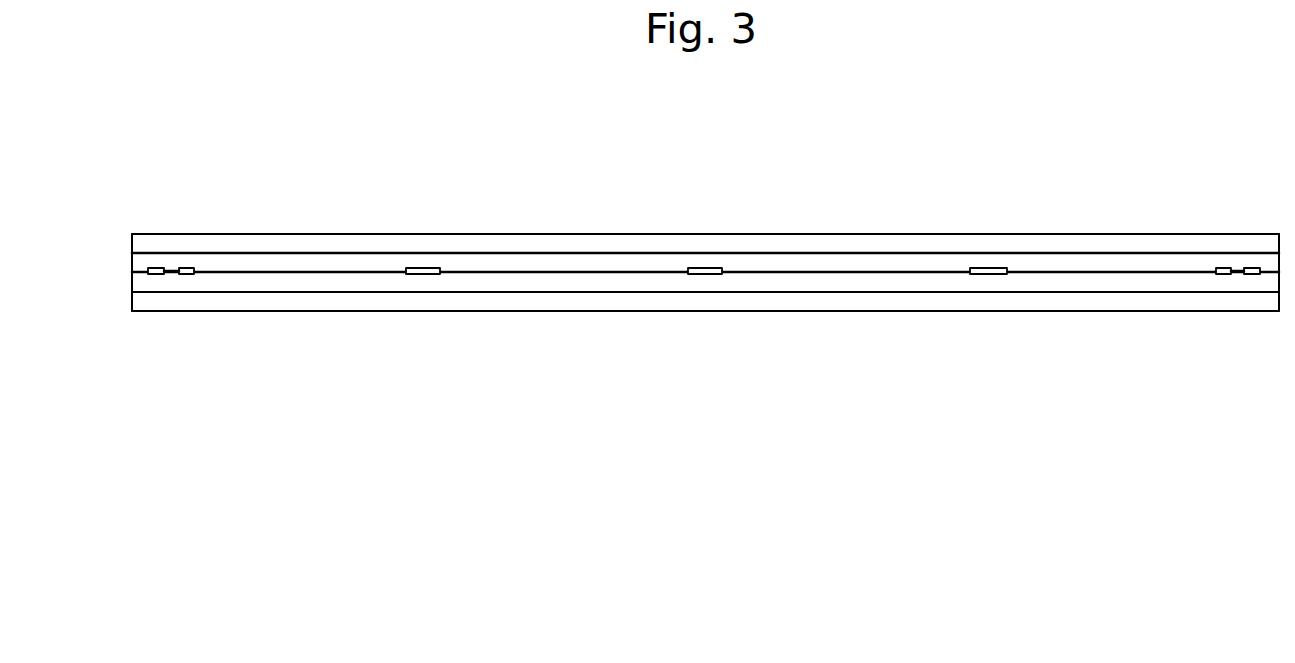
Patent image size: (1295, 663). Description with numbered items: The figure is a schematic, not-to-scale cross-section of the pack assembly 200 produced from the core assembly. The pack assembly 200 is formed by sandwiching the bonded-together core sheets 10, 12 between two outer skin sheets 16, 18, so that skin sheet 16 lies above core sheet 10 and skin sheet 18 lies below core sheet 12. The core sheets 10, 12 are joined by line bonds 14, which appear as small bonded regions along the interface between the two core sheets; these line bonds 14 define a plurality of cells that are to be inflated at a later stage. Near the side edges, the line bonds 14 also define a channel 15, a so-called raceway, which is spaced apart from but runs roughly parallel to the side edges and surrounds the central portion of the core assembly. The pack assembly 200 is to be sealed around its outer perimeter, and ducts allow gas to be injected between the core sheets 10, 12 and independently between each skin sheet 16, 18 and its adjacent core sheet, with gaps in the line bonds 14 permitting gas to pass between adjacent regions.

The pack assembly 200 is at (355, 155).
The core sheet 10 is at (274, 258).
The core sheet 12 is at (307, 282).
The line bonds 14 is at (153, 268).
The channel 15 is at (174, 268).
The skin sheet 16 is at (1142, 240).
The skin sheet 18 is at (1202, 302).